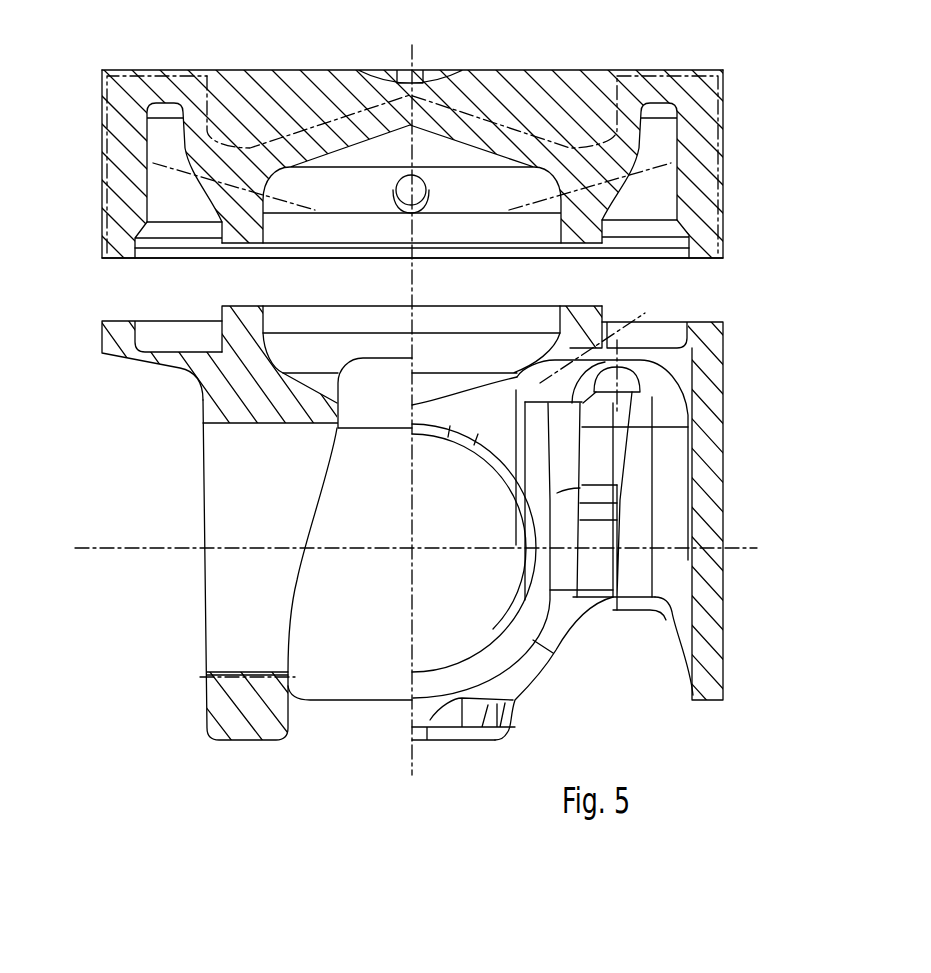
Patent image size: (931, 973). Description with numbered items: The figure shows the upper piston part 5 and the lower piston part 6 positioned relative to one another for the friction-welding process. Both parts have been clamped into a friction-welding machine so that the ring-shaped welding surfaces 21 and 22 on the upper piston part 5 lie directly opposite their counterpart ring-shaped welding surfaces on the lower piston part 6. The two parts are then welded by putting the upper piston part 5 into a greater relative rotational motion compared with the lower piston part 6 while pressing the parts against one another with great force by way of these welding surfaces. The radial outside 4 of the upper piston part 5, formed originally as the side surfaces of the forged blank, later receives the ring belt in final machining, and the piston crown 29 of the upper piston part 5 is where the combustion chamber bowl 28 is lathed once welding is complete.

The side surfaces 4 is at (102, 157).
The upper piston part 5 is at (698, 200).
The lower piston part 6 is at (710, 517).
The ring-shaped welding surface 21 is at (705, 259).
The ring-shaped welding surface 22 is at (575, 248).
The combustion chamber bowl 28 is at (258, 115).
The piston crown 29 is at (488, 78).